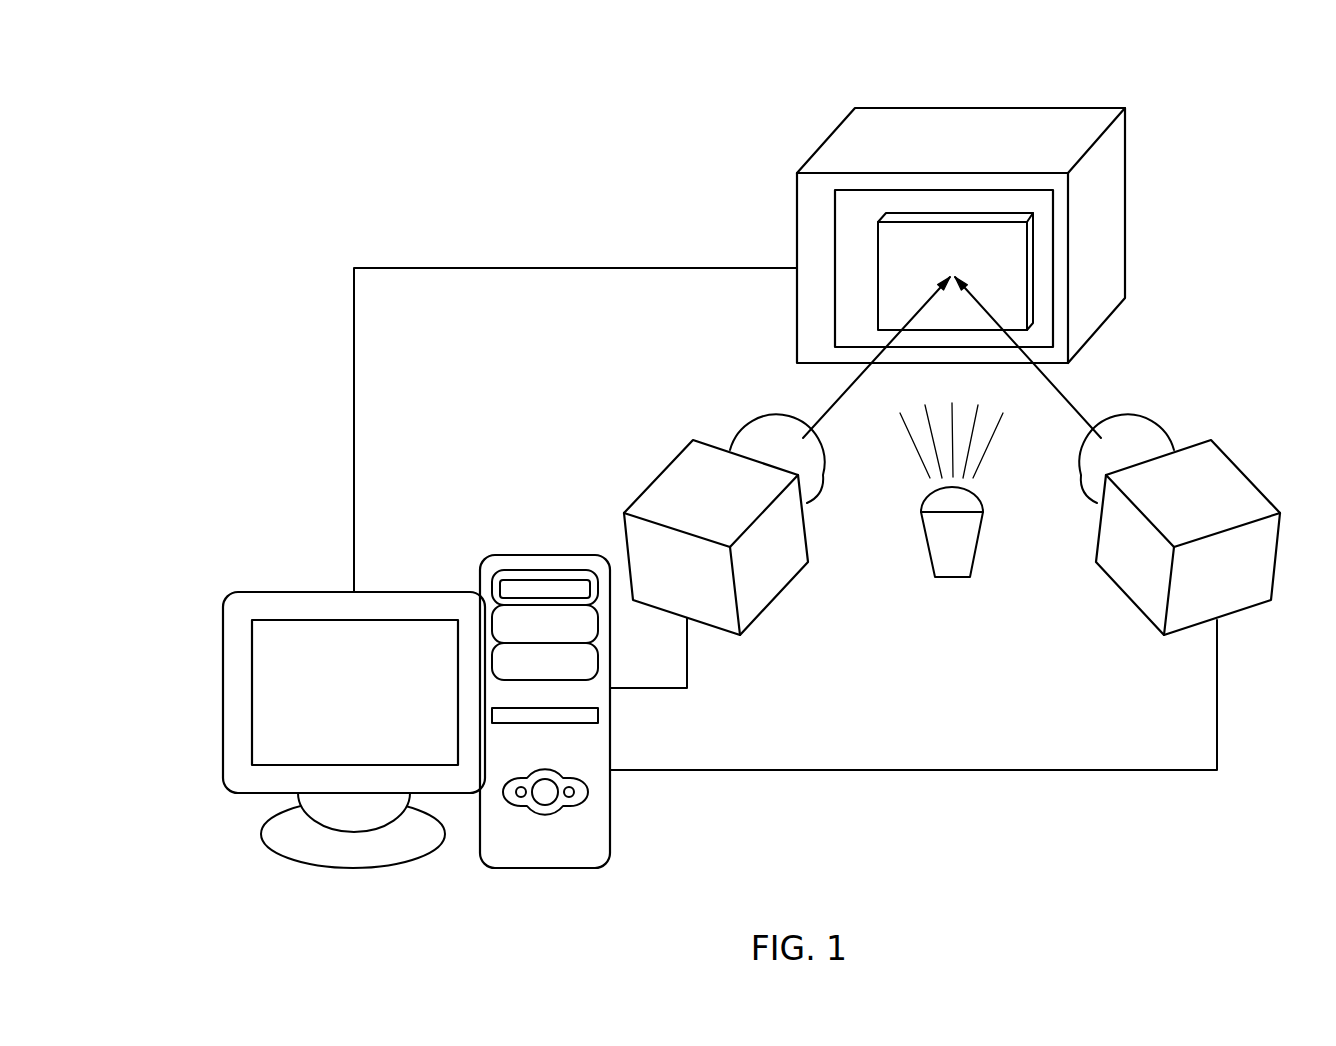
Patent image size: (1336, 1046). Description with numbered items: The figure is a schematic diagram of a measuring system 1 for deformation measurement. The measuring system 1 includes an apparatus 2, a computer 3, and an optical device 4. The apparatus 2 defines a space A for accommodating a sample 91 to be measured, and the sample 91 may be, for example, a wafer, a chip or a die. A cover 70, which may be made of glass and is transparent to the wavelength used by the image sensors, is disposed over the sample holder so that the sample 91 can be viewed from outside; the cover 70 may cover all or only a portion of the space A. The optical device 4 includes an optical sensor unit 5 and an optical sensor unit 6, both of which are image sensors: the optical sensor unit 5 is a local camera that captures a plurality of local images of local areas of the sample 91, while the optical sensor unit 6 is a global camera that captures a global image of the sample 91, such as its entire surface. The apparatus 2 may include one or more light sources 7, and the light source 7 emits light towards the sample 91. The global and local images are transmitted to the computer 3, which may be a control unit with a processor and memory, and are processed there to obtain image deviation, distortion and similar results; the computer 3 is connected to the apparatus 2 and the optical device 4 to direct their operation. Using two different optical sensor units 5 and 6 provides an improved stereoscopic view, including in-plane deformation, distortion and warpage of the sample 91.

The measuring system 1 is at (243, 87).
The apparatus 2 is at (970, 132).
The cover 70 is at (835, 318).
The space A is at (852, 282).
The sample 91 is at (1008, 260).
The computer 3 is at (288, 608).
The optical device 4 is at (952, 520).
The optical sensor unit 5 is at (1117, 493).
The optical sensor unit 6 is at (770, 583).
The light source 7 is at (952, 577).